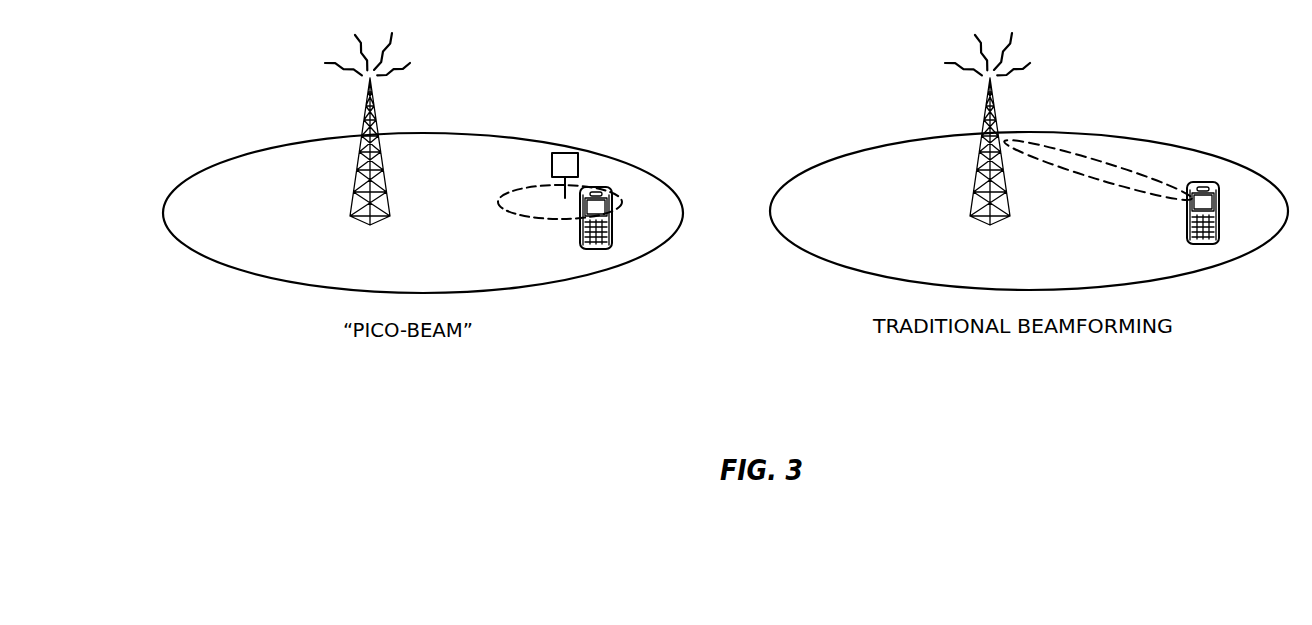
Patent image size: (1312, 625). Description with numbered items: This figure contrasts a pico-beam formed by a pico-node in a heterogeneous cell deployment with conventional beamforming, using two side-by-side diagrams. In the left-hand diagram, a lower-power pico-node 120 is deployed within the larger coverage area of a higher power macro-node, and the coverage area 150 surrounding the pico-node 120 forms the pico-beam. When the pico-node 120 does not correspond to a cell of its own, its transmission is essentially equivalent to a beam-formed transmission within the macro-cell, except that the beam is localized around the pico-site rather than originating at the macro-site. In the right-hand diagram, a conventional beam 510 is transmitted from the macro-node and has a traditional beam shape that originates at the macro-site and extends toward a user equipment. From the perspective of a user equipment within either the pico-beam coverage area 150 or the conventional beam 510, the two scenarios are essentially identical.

The pico-node 120 is at (552, 165).
The coverage area 150 is at (510, 218).
The conventional beam 510 is at (1115, 186).